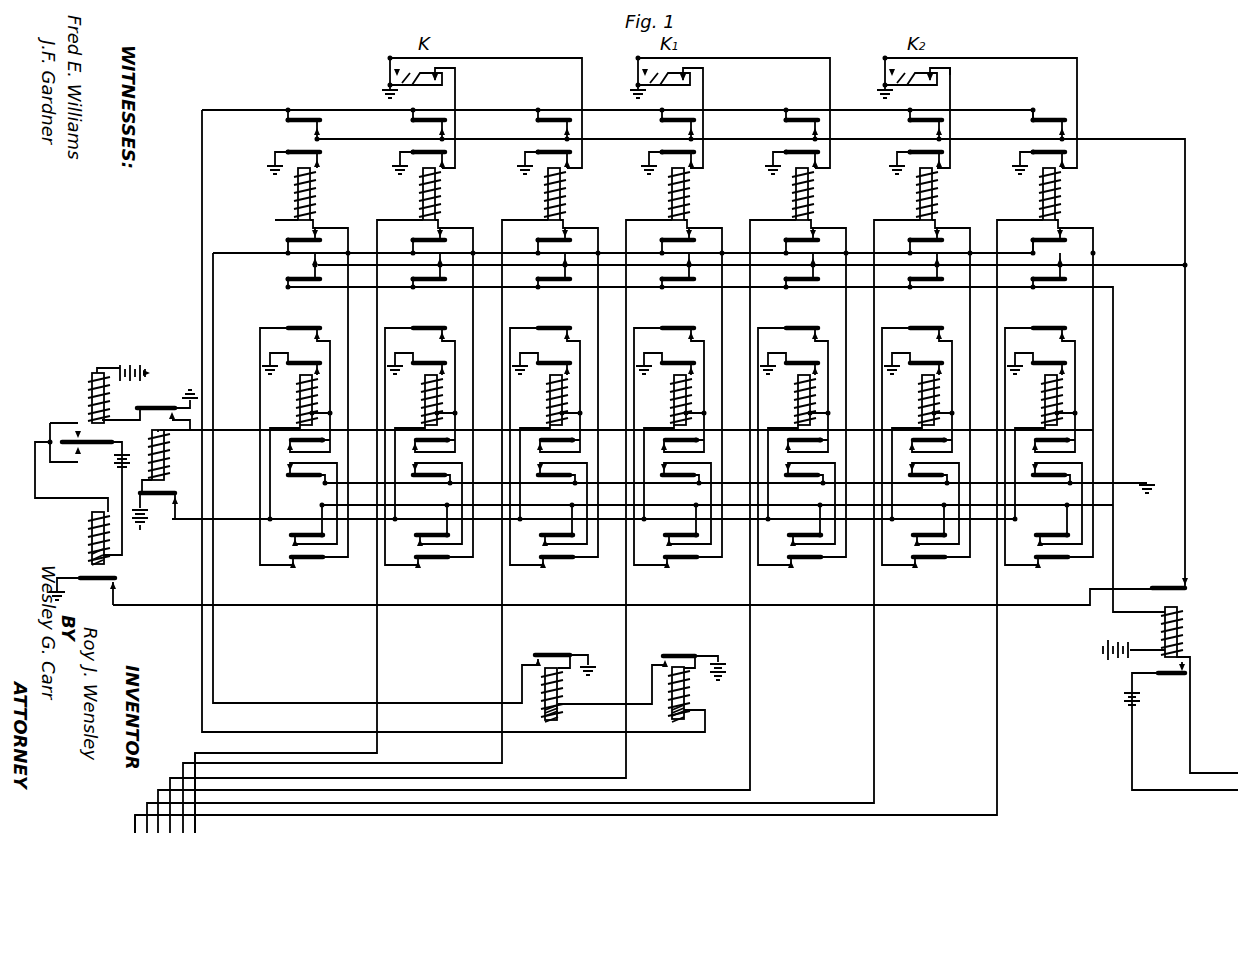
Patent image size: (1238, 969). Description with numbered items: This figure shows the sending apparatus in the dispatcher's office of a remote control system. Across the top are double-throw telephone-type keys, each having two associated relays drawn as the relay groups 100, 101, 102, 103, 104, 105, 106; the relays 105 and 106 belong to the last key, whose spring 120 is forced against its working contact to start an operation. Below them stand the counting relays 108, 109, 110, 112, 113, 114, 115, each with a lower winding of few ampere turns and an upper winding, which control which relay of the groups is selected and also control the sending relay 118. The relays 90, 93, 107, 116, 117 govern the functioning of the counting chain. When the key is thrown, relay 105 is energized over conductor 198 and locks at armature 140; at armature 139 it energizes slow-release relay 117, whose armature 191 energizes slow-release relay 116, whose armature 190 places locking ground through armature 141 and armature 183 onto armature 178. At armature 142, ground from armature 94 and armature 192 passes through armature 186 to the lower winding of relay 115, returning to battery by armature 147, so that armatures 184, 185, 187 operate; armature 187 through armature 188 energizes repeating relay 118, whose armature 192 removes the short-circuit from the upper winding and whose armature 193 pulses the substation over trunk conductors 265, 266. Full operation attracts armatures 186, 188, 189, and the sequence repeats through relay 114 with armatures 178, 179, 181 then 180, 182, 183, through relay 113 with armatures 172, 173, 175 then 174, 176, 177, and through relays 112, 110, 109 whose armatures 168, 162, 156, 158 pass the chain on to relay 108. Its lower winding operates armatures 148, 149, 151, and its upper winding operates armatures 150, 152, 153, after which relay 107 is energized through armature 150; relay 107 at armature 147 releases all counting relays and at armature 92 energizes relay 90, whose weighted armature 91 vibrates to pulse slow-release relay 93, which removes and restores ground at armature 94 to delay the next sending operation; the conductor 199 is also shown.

The relay 90 is at (97, 387).
The armature 91 is at (100, 455).
The armature 92 is at (173, 406).
The slow-release relay 93 is at (90, 530).
The armature 94 is at (112, 576).
The relay 100 is at (323, 194).
The relay 101 is at (448, 194).
The relay 102 is at (573, 194).
The relay 103 is at (697, 194).
The relay 104 is at (821, 194).
The relay 105 is at (945, 194).
The relay 106 is at (1068, 194).
The relay 107 is at (166, 458).
The counting relay 108 is at (289, 400).
The counting relay 109 is at (414, 400).
The counting relay 110 is at (539, 400).
The counting relay 112 is at (663, 400).
The third counting relay 113 is at (787, 400).
The second counting relay 114 is at (911, 400).
The counting relay 115 is at (1034, 400).
The slow-release relay 116 is at (558, 686).
The slow-release relay 117 is at (684, 686).
The repeating relay 118 is at (1176, 634).
The spring 120 is at (943, 82).
The armature 139 is at (911, 126).
The armature 140 is at (902, 148).
The armature 141 is at (917, 233).
The armature 142 is at (911, 268).
The armature 147 is at (172, 490).
The armature 148 is at (315, 317).
The armature 149 is at (311, 351).
The armature 150 is at (298, 455).
The armature 151 is at (306, 485).
The armature 152 is at (292, 545).
The armature 153 is at (308, 573).
The armature 156 is at (423, 455).
The armature 158 is at (426, 519).
The armature 162 is at (547, 455).
The armature 168 is at (671, 455).
The armature 172 is at (813, 317).
The armature 173 is at (809, 351).
The armature 174 is at (795, 455).
The armature 175 is at (799, 488).
The armature 176 is at (790, 545).
The armature 177 is at (807, 573).
The armature 178 is at (919, 317).
The armature 179 is at (930, 351).
The armature 180 is at (916, 449).
The armature 181 is at (914, 478).
The armature 182 is at (912, 545).
The armature 183 is at (929, 573).
The armature 184 is at (1042, 317).
The armature 185 is at (1053, 351).
The armature 186 is at (1064, 426).
The armature 187 is at (1045, 488).
The armature 188 is at (1046, 521).
The armature 189 is at (1050, 573).
The armature 190 is at (563, 654).
The armature 191 is at (693, 654).
The armature 192 is at (1168, 586).
The armature 193 is at (1172, 678).
The conductor 198 is at (170, 766).
The conductor 199 is at (122, 802).
The trunk conductor 265 is at (1214, 761).
The trunk conductor 266 is at (1185, 800).